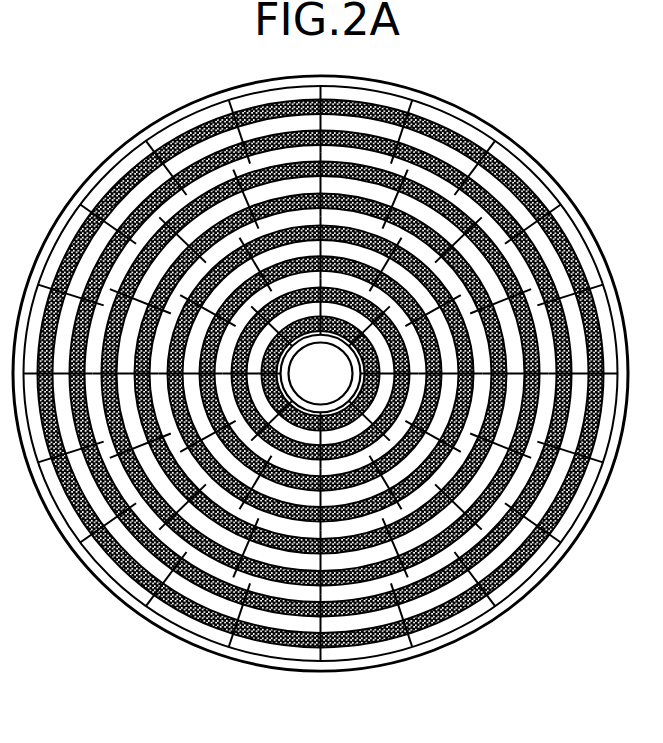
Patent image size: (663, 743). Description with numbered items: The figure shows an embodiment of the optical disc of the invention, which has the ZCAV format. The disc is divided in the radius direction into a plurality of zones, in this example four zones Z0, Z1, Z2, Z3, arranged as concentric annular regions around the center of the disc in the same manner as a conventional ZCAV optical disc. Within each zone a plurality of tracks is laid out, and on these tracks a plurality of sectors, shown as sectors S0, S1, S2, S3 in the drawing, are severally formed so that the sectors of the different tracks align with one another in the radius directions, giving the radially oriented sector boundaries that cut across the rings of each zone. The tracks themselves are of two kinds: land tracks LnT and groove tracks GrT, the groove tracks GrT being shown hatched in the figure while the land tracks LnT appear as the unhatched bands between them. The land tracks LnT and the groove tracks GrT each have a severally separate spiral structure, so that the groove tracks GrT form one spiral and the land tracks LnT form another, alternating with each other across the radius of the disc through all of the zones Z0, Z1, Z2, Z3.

The zone Z0 is at (572, 373).
The zone Z1 is at (511, 373).
The zone Z2 is at (449, 373).
The zone Z3 is at (392, 373).
The sector S0 is at (405, 118).
The sector S1 is at (403, 184).
The sector S2 is at (393, 248).
The sector S3 is at (381, 312).
The groove track GrT is at (270, 646).
The land track LnT is at (361, 650).